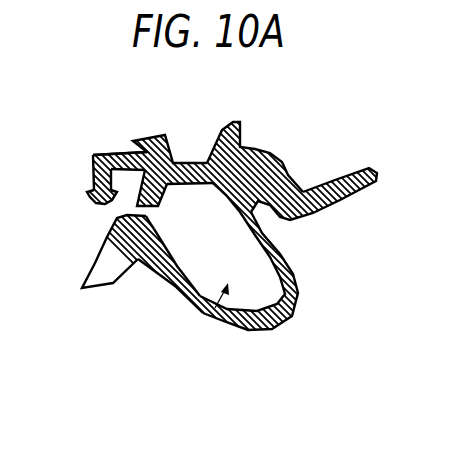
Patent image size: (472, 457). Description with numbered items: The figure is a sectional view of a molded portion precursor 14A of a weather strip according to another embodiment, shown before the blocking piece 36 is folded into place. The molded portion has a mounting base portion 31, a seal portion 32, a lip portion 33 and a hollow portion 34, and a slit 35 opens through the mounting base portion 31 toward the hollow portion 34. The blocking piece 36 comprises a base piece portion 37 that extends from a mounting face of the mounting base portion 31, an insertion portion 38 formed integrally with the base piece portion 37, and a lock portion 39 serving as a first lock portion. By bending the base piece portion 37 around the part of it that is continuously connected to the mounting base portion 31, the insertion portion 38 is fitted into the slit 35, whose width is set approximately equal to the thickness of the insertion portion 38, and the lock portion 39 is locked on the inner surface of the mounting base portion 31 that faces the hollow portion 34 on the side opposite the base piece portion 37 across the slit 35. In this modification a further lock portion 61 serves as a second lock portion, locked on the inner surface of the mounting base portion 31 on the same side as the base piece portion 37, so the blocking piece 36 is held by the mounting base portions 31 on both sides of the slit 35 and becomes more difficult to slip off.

The molded portion precursor 14A is at (277, 142).
The mounting base portion 31 is at (100, 262).
The seal portion 32 is at (267, 332).
The lip portion 33 is at (351, 167).
The hollow portion 34 is at (203, 317).
The slit 35 is at (130, 219).
The blocking piece 36 is at (79, 124).
The base piece portion 37 is at (118, 152).
The insertion portion 38 is at (93, 173).
The lock portion 39 is at (88, 198).
The lock portion 61 is at (117, 207).